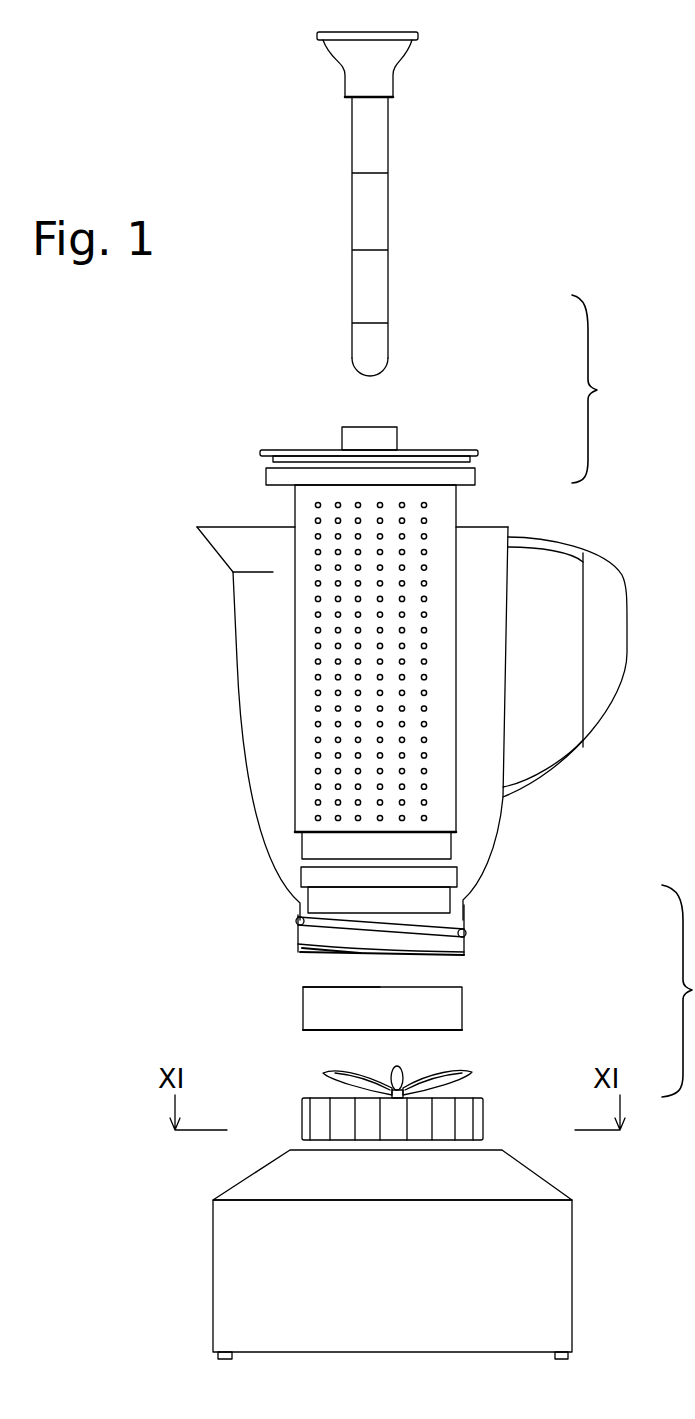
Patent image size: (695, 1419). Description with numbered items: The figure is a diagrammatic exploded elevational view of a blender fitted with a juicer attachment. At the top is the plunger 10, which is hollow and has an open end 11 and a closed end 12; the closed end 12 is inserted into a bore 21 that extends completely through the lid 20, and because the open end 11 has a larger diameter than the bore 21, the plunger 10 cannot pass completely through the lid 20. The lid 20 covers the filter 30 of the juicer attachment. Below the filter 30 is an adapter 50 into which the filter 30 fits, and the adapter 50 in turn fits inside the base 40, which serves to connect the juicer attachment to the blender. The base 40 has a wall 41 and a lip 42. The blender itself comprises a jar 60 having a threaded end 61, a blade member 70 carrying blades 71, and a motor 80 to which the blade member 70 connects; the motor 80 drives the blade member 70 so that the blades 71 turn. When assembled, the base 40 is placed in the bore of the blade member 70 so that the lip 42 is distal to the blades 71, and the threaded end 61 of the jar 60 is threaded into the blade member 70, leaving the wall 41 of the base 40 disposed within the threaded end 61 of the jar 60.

The plunger 10 is at (388, 215).
The open end 11 is at (405, 38).
The closed end 12 is at (383, 378).
The lid 20 is at (398, 450).
The bore 21 is at (340, 427).
The filter 30 is at (456, 510).
The base 40 is at (462, 1010).
The wall 41 is at (303, 1003).
The lip 42 is at (318, 1032).
The adapter 50 is at (435, 902).
The jar 60 is at (495, 822).
The threaded end 61 is at (466, 946).
The blade member 70 is at (483, 1115).
The blades 71 is at (455, 1072).
The motor 80 is at (553, 1283).